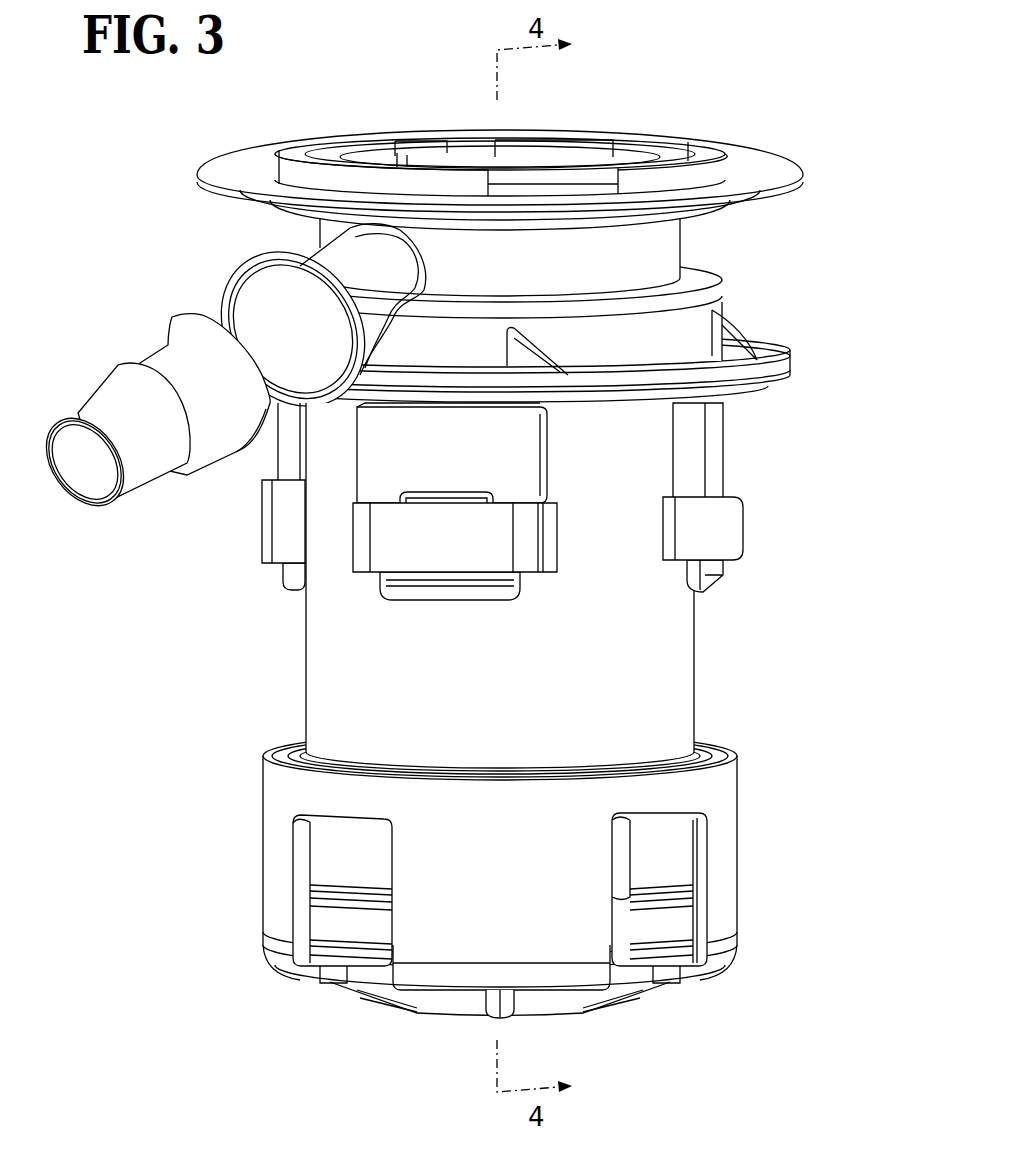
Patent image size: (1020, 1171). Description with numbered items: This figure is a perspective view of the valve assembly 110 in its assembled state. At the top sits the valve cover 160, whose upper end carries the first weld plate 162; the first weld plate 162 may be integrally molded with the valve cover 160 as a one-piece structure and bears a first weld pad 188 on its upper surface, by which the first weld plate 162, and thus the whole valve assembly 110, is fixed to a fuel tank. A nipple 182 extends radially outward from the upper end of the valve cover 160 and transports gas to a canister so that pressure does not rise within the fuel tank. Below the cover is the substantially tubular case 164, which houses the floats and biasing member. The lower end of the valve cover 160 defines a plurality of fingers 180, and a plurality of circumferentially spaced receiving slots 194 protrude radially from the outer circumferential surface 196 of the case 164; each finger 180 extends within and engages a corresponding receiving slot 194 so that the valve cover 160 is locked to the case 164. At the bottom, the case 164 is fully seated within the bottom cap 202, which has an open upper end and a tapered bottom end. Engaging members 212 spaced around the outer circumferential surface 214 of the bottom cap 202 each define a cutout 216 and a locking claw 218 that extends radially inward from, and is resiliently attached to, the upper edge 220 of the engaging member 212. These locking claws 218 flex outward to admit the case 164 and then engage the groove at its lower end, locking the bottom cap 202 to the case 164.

The valve assembly 110 is at (75, 256).
The valve cover 160 is at (782, 290).
The first weld plate 162 is at (816, 170).
The case 164 is at (268, 662).
The fingers 180 is at (512, 462).
The nipple 182 is at (95, 403).
The first weld pad 188 is at (572, 130).
The receiving slots 194 is at (540, 543).
The outer circumferential surface 196 is at (668, 683).
The bottom cap 202 is at (495, 748).
The engaging members 212 is at (686, 842).
The outer circumferential surface 214 is at (272, 793).
The cutout 216 is at (672, 923).
The locking claw 218 is at (680, 875).
The upper edge 220 is at (330, 812).